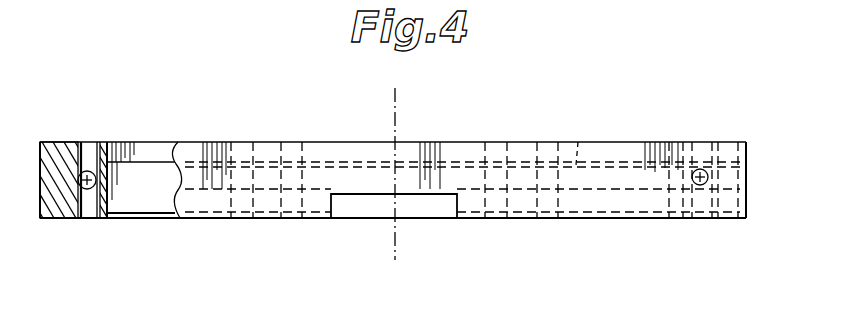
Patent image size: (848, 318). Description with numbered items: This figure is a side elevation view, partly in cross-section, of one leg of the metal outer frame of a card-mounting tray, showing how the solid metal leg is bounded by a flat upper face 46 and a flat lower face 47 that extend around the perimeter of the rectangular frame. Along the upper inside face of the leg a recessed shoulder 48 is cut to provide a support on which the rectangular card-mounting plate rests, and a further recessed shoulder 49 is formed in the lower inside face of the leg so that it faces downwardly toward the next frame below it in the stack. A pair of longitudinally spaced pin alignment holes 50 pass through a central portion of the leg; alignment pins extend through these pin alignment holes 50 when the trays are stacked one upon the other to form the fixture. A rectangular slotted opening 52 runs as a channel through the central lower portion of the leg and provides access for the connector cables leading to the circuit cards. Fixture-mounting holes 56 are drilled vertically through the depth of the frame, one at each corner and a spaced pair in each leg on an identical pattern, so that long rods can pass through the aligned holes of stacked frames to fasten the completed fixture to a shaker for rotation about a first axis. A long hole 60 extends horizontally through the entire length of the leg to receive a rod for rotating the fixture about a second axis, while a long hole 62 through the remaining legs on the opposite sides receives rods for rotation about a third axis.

The upper face 46 is at (58, 142).
The lower face 47 is at (66, 218).
The recessed shoulder 48 is at (107, 162).
The bottom wall 49 is at (107, 218).
The pin alignment holes 50 is at (322, 142).
The slotted opening 52 is at (332, 200).
The fixture-mounting holes 56 is at (84, 150).
The long holes 60 is at (580, 142).
The long holes 62 is at (88, 190).